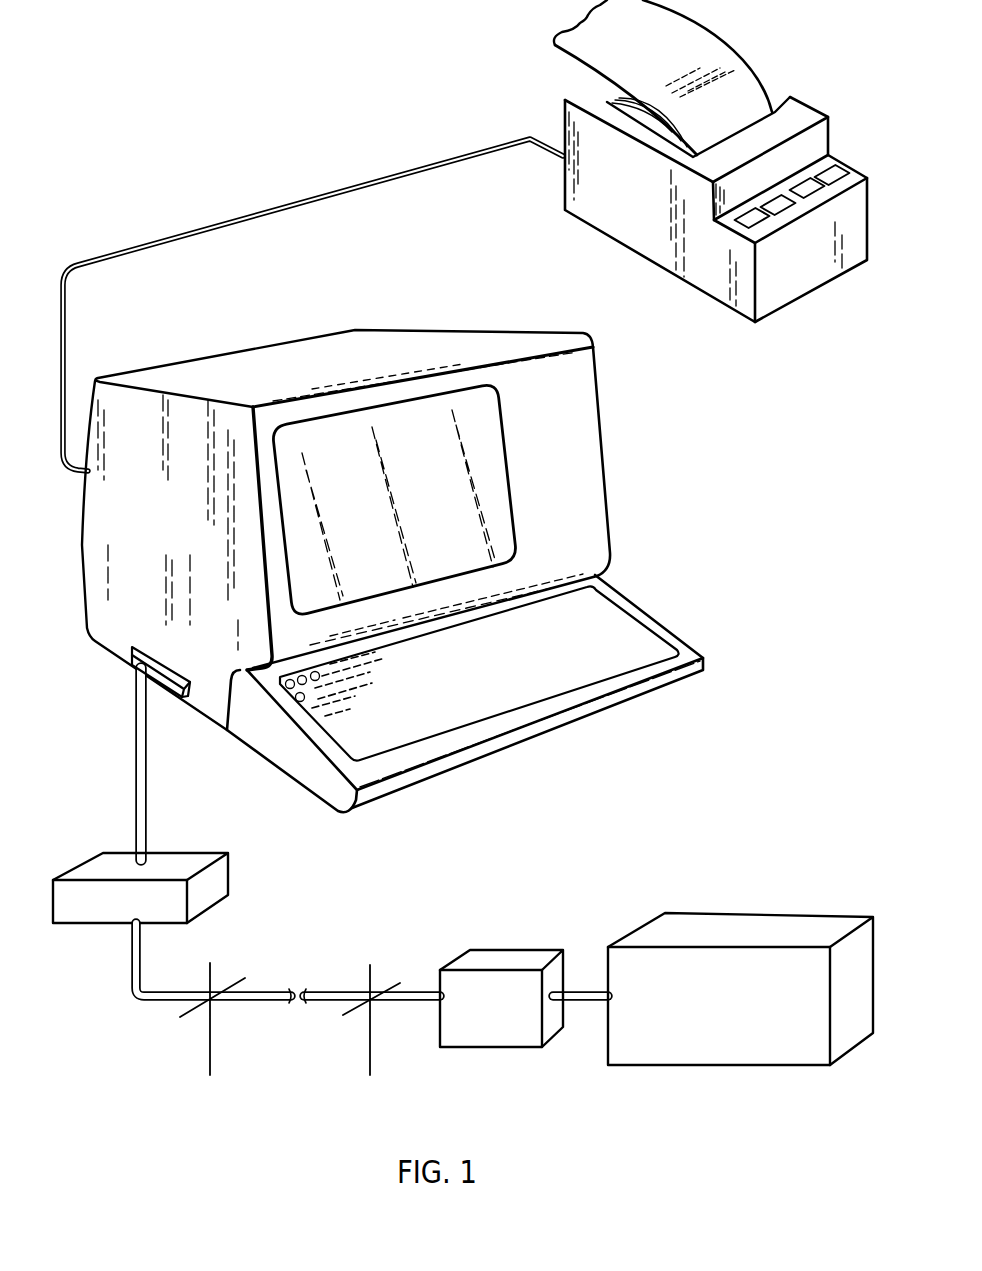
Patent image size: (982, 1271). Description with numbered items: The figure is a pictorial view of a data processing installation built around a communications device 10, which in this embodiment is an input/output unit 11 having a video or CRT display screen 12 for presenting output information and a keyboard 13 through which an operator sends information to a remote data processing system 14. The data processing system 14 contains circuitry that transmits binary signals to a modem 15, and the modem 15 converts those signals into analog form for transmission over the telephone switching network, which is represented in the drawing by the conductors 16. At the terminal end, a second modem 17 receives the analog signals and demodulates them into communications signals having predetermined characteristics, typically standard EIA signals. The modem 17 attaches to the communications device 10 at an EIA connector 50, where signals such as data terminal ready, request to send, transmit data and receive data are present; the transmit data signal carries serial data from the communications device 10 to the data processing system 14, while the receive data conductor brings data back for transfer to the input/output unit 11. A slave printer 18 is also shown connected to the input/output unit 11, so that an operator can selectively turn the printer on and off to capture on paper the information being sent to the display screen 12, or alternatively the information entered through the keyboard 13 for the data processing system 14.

The communications device 10 is at (418, 323).
The input/output unit 11 is at (263, 347).
The display screen 12 is at (497, 517).
The keyboard 13 is at (613, 613).
The data processing system 14 is at (717, 913).
The modem 15 is at (523, 950).
The conductors 16 is at (333, 988).
The modem 17 is at (223, 878).
The slave printer 18 is at (788, 322).
The EIA connector 50 is at (138, 662).